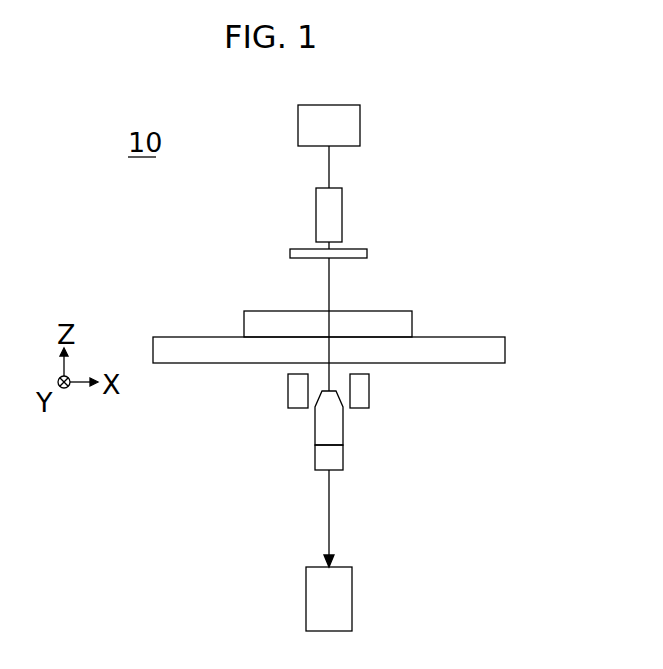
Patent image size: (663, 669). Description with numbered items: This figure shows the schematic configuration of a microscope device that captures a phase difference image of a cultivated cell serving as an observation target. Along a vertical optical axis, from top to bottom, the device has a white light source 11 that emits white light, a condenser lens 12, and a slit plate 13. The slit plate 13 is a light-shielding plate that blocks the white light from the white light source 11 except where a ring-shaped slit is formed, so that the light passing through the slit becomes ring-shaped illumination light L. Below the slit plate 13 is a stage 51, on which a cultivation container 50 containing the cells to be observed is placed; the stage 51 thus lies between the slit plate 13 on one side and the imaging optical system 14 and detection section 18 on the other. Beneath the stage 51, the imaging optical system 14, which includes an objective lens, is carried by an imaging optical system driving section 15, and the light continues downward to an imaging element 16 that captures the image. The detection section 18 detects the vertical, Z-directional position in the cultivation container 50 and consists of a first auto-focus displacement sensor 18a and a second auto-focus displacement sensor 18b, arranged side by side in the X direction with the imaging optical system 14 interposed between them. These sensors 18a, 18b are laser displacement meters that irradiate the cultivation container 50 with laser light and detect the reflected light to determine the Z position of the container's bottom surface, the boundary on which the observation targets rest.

The white light source 11 is at (360, 116).
The condenser lens 12 is at (342, 198).
The slit plate 13 is at (367, 254).
The illumination light L is at (330, 284).
The cultivation container 50 is at (412, 318).
The stage 51 is at (505, 347).
The detection section 18 is at (334, 425).
The first auto-focus displacement sensor 18a is at (369, 385).
The second auto-focus displacement sensor 18b is at (287, 385).
The imaging optical system 14 is at (343, 432).
The imaging optical system driving section 15 is at (343, 458).
The imaging element 16 is at (352, 587).